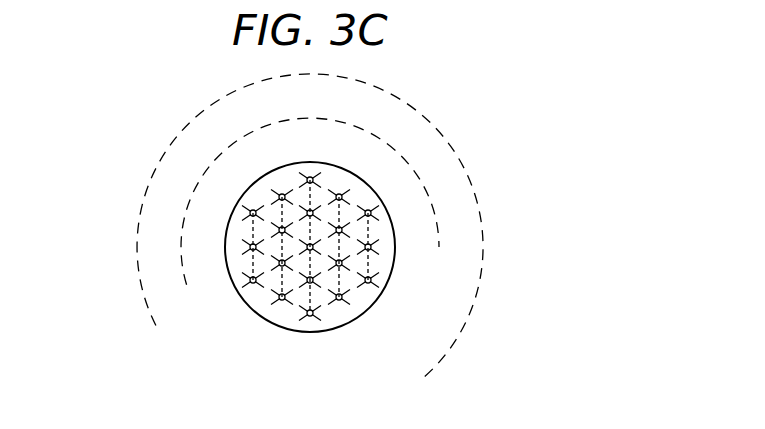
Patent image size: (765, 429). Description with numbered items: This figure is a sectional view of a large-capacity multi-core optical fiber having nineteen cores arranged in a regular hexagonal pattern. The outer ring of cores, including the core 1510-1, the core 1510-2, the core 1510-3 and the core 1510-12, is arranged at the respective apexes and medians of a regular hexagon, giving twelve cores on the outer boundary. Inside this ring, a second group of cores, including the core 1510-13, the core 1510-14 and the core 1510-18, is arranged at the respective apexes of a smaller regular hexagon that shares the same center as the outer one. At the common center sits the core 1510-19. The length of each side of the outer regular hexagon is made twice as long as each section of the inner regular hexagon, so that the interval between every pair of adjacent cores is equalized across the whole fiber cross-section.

The core 1510-19 is at (310, 243).
The core 1510-14 is at (282, 264).
The core 1510-3 is at (253, 280).
The core 1510-2 is at (282, 298).
The core 1510-13 is at (310, 281).
The core 1510-1 is at (310, 314).
The core 1510-18 is at (340, 265).
The core 1510-12 is at (340, 299).